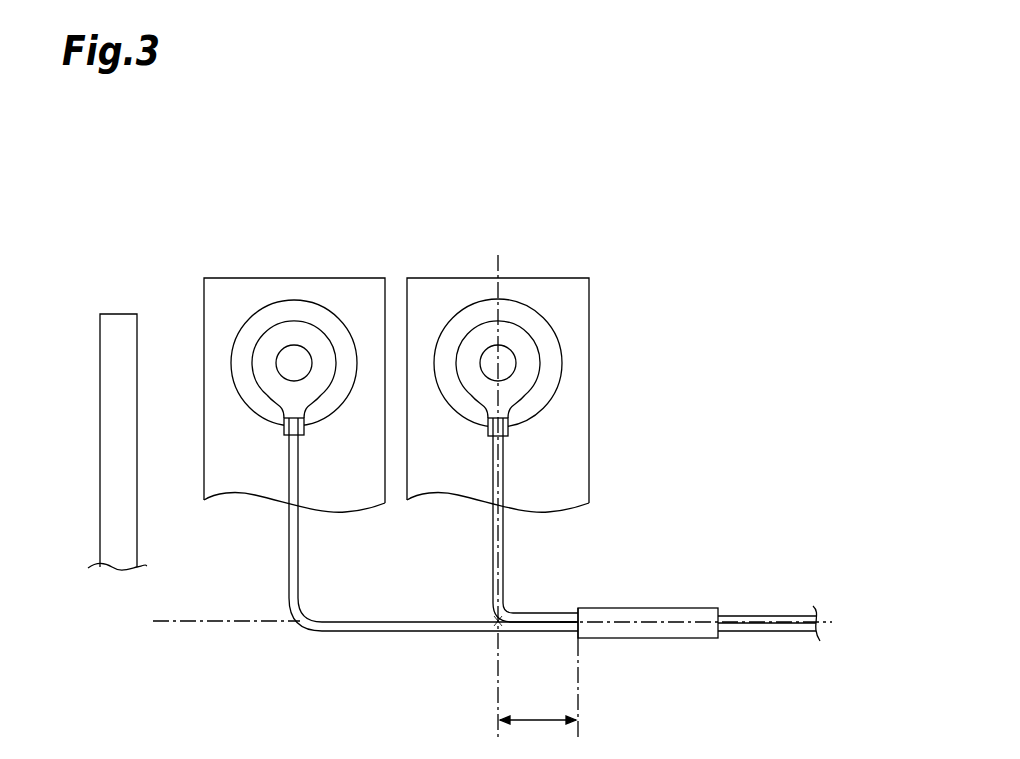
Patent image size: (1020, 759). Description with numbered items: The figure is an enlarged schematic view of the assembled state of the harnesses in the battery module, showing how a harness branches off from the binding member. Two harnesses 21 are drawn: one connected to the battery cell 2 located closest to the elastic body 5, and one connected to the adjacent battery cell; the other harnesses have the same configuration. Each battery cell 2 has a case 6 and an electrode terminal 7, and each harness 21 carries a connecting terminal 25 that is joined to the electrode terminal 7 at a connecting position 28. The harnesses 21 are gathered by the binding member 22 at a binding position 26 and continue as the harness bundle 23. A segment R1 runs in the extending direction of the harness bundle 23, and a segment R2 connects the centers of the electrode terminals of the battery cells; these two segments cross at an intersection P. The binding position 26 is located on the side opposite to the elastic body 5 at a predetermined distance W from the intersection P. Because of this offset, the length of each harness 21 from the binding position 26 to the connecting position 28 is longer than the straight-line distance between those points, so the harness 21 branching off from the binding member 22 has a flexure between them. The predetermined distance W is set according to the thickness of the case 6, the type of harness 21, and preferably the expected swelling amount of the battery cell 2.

The battery cell 2 is at (343, 278).
The elastic body 5 is at (100, 347).
The case 6 is at (204, 490).
The electrode terminal 7 is at (232, 350).
The harness 21 is at (289, 570).
The binding member 22 is at (690, 608).
The harness bundle 23 is at (764, 594).
The connecting terminal 25 is at (254, 378).
The binding position 26 is at (578, 614).
The connecting position 28 is at (284, 428).
The intersection P is at (497, 621).
The segment R1 is at (235, 623).
The segment R2 is at (497, 682).
The predetermined distance W is at (538, 734).